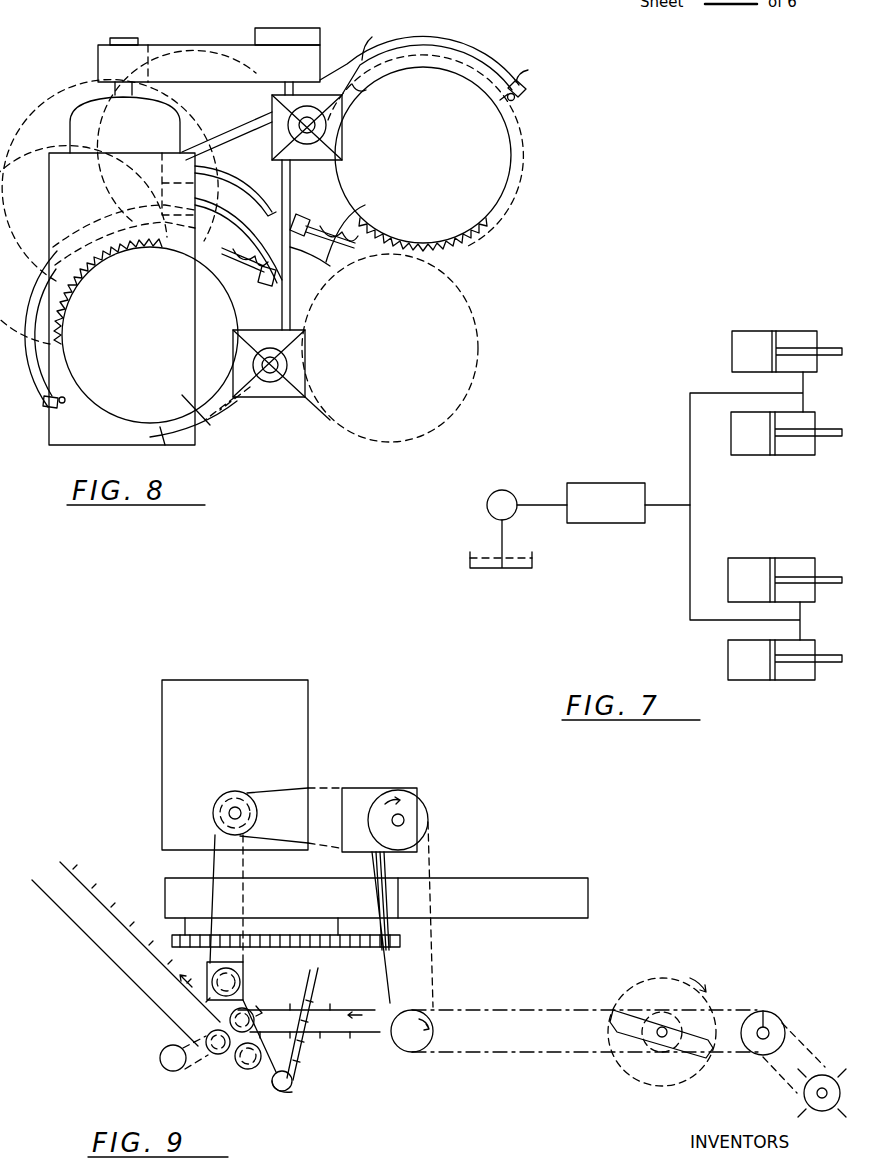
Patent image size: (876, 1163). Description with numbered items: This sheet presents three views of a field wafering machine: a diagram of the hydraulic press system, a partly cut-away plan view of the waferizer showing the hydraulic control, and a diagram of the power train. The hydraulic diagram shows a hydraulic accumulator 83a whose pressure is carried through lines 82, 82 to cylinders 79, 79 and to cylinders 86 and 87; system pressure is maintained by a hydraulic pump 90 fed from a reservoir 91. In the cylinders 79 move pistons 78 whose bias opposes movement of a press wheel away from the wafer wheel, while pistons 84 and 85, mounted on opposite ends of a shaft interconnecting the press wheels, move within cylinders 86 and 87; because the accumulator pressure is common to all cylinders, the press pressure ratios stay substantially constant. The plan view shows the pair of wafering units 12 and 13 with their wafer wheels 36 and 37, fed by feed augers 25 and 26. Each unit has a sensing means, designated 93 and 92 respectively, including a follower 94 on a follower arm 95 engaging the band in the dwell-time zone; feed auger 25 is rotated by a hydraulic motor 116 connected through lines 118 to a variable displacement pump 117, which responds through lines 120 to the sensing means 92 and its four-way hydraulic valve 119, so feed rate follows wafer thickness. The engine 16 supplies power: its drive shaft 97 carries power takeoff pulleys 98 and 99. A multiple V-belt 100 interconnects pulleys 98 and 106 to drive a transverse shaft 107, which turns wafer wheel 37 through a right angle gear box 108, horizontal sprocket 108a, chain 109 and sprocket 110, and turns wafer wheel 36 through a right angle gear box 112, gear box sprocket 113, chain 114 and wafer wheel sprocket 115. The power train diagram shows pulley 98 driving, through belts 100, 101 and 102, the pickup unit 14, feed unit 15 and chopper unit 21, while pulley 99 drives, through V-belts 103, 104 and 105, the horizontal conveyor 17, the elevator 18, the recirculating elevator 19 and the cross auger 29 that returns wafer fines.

In FIG. 8, the wafering unit 12 is at (101, 210).
In FIG. 8, the wafering unit 13 is at (471, 276).
In FIG. 9, the pickup unit 14 is at (826, 1077).
In FIG. 9, the feed unit 15 is at (668, 985).
In FIG. 8, the engine 16 is at (66, 160).
In FIG. 9, the engine 16 is at (288, 682).
In FIG. 9, the horizontal conveyor 17 is at (342, 1010).
In FIG. 9, the elevator 18 is at (114, 915).
In FIG. 9, the recirculating elevator 19 is at (284, 976).
In FIG. 9, the chopper unit 21 is at (772, 1020).
In FIG. 8, the feed auger 25 is at (350, 215).
In FIG. 8, the feed auger 26 is at (250, 288).
In FIG. 9, the cross auger 29 is at (244, 1068).
In FIG. 8, the wafer wheel 36 is at (508, 198).
In FIG. 8, the wafer wheel 37 is at (208, 424).
In FIG. 7, the piston 78 is at (773, 338).
In FIG. 7, the cylinder 79 is at (805, 562).
In FIG. 7, the line 82 is at (690, 468).
In FIG. 7, the hydraulic accumulator 83a is at (603, 485).
In FIG. 7, the piston 84 is at (773, 562).
In FIG. 7, the piston 85 is at (772, 672).
In FIG. 7, the cylinder 86 is at (805, 338).
In FIG. 7, the cylinder 87 is at (803, 420).
In FIG. 7, the hydraulic pump 90 is at (510, 491).
In FIG. 7, the reservoir 91 is at (518, 556).
In FIG. 8, the sensing means 92 is at (529, 104).
In FIG. 8, the sensing means 93 is at (66, 414).
In FIG. 8, the follower 94 is at (505, 97).
In FIG. 8, the follower arm 95 is at (526, 74).
In FIG. 8, the engine drive shaft 97 is at (112, 90).
In FIG. 8, the power takeoff pulley 98 is at (140, 52).
In FIG. 9, the power takeoff pulley 98 is at (232, 797).
In FIG. 8, the power takeoff pulley 99 is at (116, 40).
In FIG. 9, the power takeoff pulley 99 is at (244, 818).
In FIG. 8, the multiple V-belt 100 is at (195, 44).
In FIG. 9, the multiple V-belt 100 is at (325, 790).
In FIG. 9, the belt 101 is at (432, 876).
In FIG. 9, the belt 102 is at (500, 1010).
In FIG. 9, the V-belt 103 is at (250, 865).
In FIG. 9, the V-belt 104 is at (246, 984).
In FIG. 9, the V-belt 105 is at (210, 1068).
In FIG. 8, the pulley 106 is at (318, 62).
In FIG. 8, the shaft 107 is at (324, 268).
In FIG. 8, the right angle gear box 108 is at (268, 400).
In FIG. 8, the horizontal sprocket 108a is at (290, 360).
In FIG. 8, the chain 109 is at (226, 400).
In FIG. 8, the sprocket 110 is at (164, 444).
In FIG. 8, the right angle gear box 112 is at (335, 152).
In FIG. 8, the gear box sprocket 113 is at (318, 125).
In FIG. 8, the chain 114 is at (366, 91).
In FIG. 8, the wafer wheel sprocket 115 is at (455, 72).
In FIG. 8, the hydraulic motor 116 is at (300, 216).
In FIG. 8, the variable displacement pump 117 is at (194, 166).
In FIG. 8, the lines 118 is at (235, 200).
In FIG. 8, the 4-way hydraulic valve 119 is at (527, 90).
In FIG. 8, the lines 120 is at (372, 44).